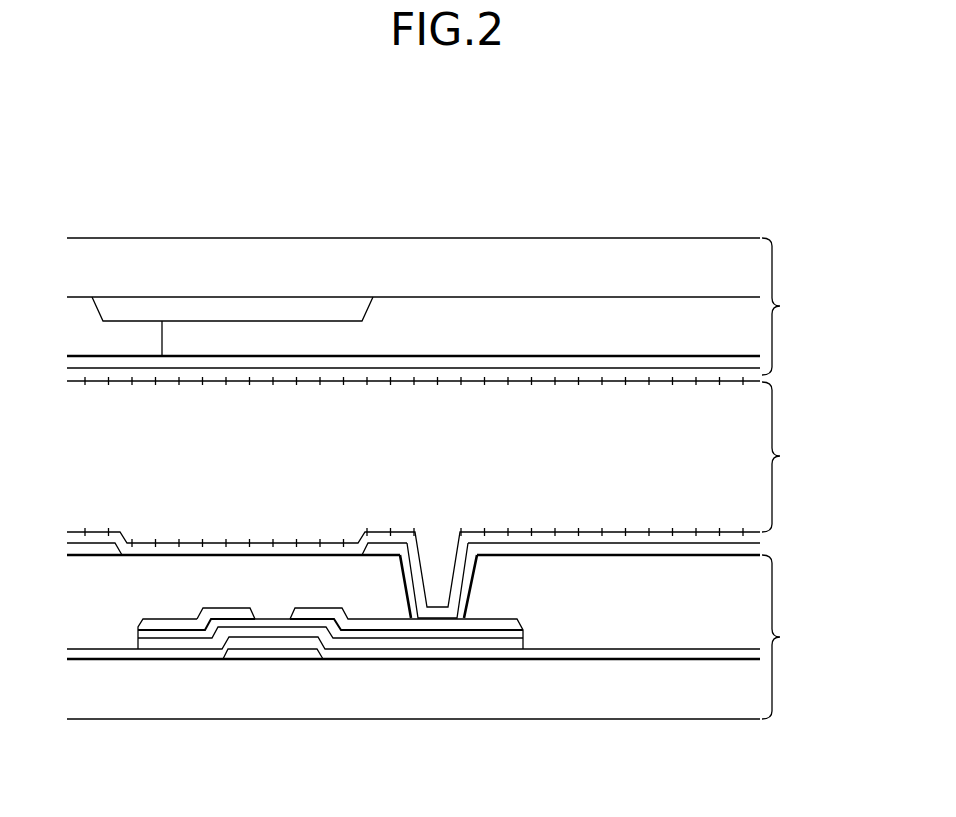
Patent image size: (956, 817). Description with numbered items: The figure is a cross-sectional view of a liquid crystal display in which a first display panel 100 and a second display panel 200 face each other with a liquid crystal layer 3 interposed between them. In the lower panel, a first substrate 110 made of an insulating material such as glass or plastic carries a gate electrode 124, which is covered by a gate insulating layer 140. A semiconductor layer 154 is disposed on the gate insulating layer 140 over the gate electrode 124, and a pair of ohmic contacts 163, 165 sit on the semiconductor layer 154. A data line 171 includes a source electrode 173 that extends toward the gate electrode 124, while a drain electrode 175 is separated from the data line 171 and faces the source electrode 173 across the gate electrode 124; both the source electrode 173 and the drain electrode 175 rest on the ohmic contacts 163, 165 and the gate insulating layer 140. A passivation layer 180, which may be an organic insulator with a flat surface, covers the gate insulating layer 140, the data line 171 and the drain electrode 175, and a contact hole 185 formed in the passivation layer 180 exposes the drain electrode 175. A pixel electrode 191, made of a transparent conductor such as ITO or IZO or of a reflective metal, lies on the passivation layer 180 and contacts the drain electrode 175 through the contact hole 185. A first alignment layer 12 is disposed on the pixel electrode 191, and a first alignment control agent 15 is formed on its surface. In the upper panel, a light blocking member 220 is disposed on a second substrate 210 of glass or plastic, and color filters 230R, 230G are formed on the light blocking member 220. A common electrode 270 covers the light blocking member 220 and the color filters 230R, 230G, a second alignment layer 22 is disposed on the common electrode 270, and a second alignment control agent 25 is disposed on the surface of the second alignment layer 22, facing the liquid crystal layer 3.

The second display panel 200 is at (787, 306).
The second substrate 210 is at (512, 258).
The light blocking member 220 is at (286, 310).
The color filter 230R is at (119, 347).
The color filter 230G is at (527, 347).
The common electrode 270 is at (308, 362).
The second alignment control agent 25 is at (578, 383).
The second alignment layer 22 is at (380, 373).
The liquid crystal layer 3 is at (779, 457).
The first display panel 100 is at (787, 637).
The first alignment control agent 15 is at (652, 527).
The first alignment layer 12 is at (707, 535).
The pixel electrode 191 is at (92, 548).
The contact hole 185 is at (444, 578).
The passivation layer 180 is at (560, 578).
The source electrode 173 is at (240, 602).
The data line 171 is at (157, 625).
The ohmic contact 163 is at (197, 633).
The ohmic contact 165 is at (380, 630).
The semiconductor layer 154 is at (298, 632).
The drain electrode 175 is at (473, 627).
The gate insulating layer 140 is at (573, 653).
The gate electrode 124 is at (265, 653).
The first substrate 110 is at (654, 700).